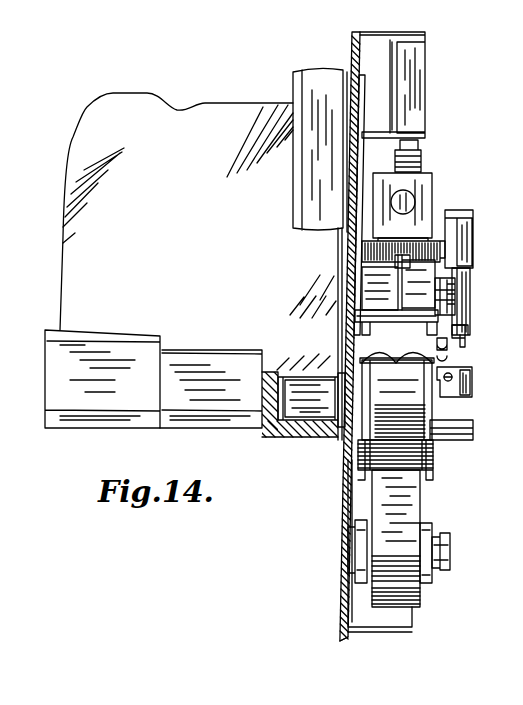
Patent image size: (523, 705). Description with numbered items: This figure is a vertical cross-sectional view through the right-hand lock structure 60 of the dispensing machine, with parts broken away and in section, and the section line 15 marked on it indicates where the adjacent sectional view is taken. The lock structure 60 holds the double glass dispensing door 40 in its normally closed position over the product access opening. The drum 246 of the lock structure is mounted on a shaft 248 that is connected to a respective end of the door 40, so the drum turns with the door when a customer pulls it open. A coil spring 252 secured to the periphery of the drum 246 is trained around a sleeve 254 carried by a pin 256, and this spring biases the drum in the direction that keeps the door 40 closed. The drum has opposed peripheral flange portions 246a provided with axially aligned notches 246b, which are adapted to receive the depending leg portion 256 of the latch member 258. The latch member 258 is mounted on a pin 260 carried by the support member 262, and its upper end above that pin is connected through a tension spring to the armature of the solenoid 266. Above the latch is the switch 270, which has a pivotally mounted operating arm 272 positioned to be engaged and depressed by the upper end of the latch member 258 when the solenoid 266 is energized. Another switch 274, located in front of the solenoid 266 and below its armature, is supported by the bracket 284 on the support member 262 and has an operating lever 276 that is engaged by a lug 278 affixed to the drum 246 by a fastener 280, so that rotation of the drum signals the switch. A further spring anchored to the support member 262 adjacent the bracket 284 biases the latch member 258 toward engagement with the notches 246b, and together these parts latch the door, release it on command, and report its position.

The dispensing door 40 is at (65, 198).
The lock structure 60 is at (363, 642).
The section line 15— 15 is at (330, 268).
The drum 246 is at (398, 465).
The peripheral flange portion 246a is at (436, 455).
The notch 246b is at (397, 397).
The shaft 248 is at (311, 383).
The coil spring 252 is at (412, 612).
The sleeve 254 is at (430, 578).
The pin 256 is at (388, 315).
The latch member 258 is at (365, 278).
The pin 260 is at (455, 298).
The support member 262 is at (352, 38).
The solenoid 266 is at (428, 175).
The switch 270 is at (420, 56).
The operating arm 272 is at (418, 142).
The switch 274 is at (472, 222).
The operating lever 276 is at (455, 276).
The lug 278 is at (469, 343).
The fastener 280 is at (472, 378).
The bracket 284 is at (427, 252).